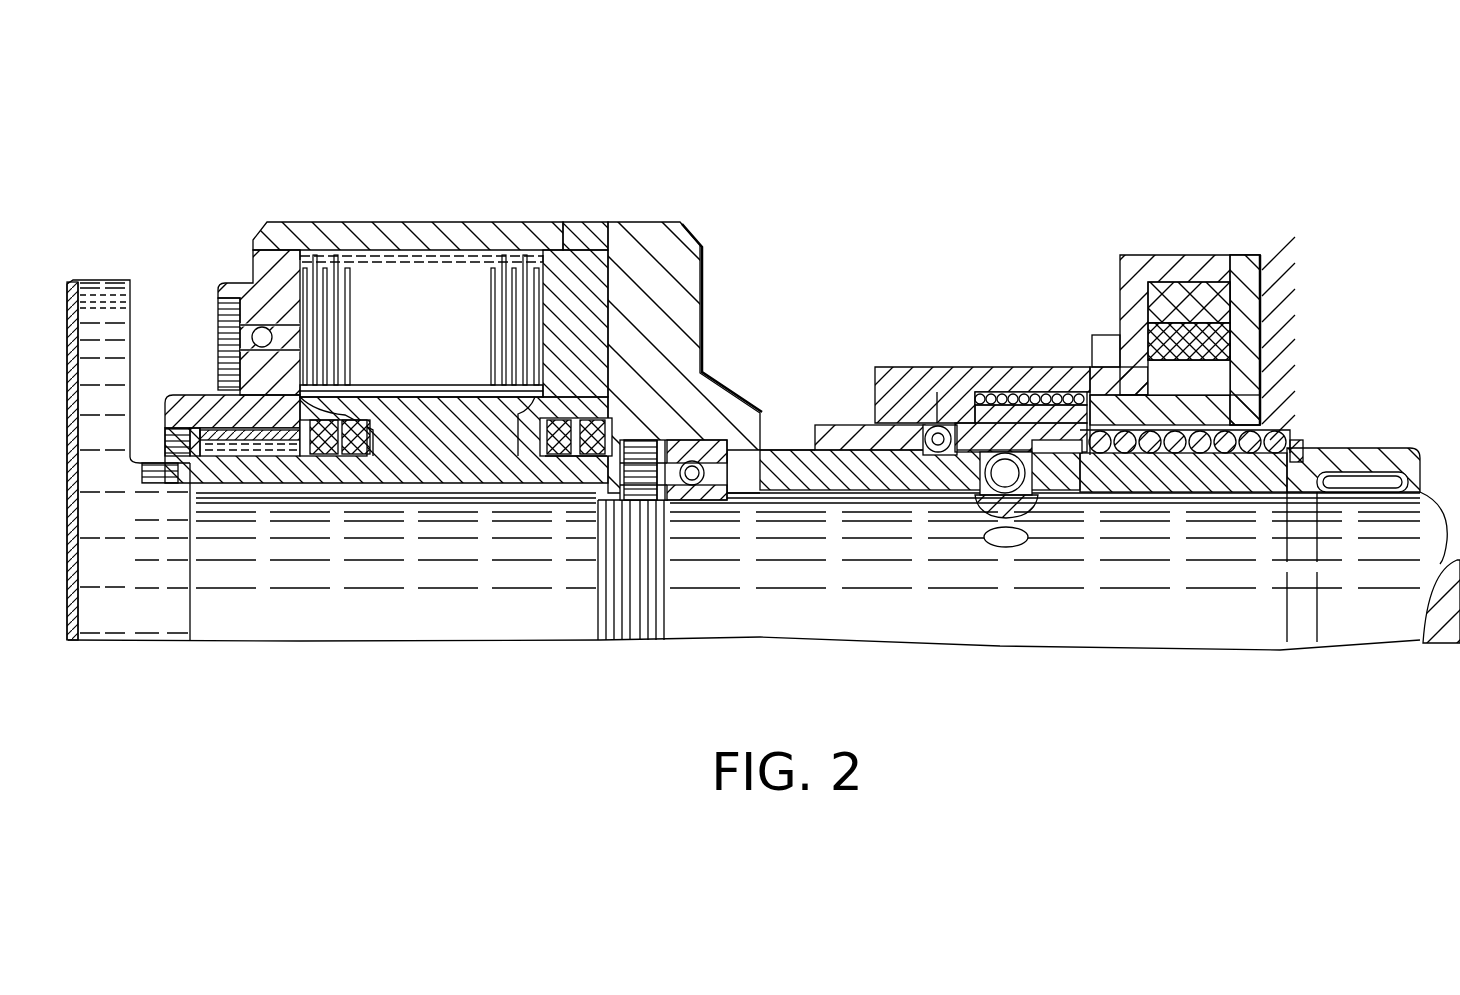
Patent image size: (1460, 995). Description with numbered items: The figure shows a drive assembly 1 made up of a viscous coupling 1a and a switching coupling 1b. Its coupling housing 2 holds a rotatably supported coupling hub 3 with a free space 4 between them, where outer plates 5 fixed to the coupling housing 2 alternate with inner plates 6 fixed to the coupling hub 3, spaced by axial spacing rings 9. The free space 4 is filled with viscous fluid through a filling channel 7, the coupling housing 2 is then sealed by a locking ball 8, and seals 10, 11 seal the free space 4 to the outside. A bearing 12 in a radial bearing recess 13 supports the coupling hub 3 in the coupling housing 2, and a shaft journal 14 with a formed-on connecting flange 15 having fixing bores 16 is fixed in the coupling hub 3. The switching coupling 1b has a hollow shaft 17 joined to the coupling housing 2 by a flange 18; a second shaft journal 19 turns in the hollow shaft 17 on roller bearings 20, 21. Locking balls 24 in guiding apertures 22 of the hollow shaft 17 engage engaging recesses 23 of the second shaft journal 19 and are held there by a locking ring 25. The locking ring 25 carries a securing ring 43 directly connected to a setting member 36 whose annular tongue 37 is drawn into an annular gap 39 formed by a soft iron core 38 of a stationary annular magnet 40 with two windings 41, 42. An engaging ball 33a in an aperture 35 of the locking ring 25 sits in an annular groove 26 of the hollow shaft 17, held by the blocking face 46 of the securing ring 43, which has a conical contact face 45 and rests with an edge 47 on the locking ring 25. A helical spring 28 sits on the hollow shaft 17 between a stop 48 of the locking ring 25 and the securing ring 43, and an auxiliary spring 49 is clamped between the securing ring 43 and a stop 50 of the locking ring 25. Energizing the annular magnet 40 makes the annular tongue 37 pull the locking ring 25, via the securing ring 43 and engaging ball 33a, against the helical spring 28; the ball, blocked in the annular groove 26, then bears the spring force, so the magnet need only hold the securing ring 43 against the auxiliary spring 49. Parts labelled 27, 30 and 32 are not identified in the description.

The drive assembly 1 is at (812, 128).
The viscous coupling 1a is at (462, 118).
The switching coupling 1b is at (1102, 122).
The coupling housing 2 is at (265, 272).
The coupling hub 3 is at (487, 472).
The free space 4 is at (430, 296).
The outer plates 5 is at (330, 252).
The inner plates 6 is at (358, 292).
The filling channel 7 is at (246, 338).
The locking ball 8 is at (259, 332).
The axial spacing rings 9 is at (512, 256).
The seal 10 is at (570, 462).
The seal 11 is at (330, 456).
The bearing 12 is at (234, 436).
The radial bearing recess 13 is at (250, 458).
The shaft journal 14 is at (450, 540).
The connecting flange 15 is at (106, 622).
The fixing bores 16 is at (104, 314).
The hollow shaft 17 is at (800, 470).
The flange 18 is at (640, 252).
The second shaft journal 19 is at (1400, 538).
The roller bearing 20 is at (710, 492).
The roller bearing 21 is at (1352, 482).
The guiding apertures 22 is at (965, 456).
The engaging recesses 23 is at (1008, 490).
The locking balls 24 is at (1012, 548).
The locking ring 25 is at (940, 456).
The annular groove 26 is at (930, 456).
The shoulder 27 is at (760, 450).
The helical spring 28 is at (1205, 458).
The ring 30 is at (1040, 454).
The spring 32 is at (1290, 430).
The engaging ball 33a is at (910, 452).
The aperture 35 is at (916, 426).
The setting member 36 is at (1038, 372).
The annular tongue 37 is at (1116, 378).
The soft iron core 38 is at (1150, 266).
The annular gap 39 is at (1105, 402).
The annular magnet 40 is at (1196, 274).
The winding 41 is at (1216, 346).
The winding 42 is at (1218, 303).
The securing ring 43 is at (920, 422).
The conical contact face 45 is at (955, 408).
The blocking face 46 is at (930, 420).
The edge 47 is at (990, 398).
The stop 48 is at (1075, 424).
The auxiliary spring 49 is at (996, 396).
The stop 50 is at (1116, 388).